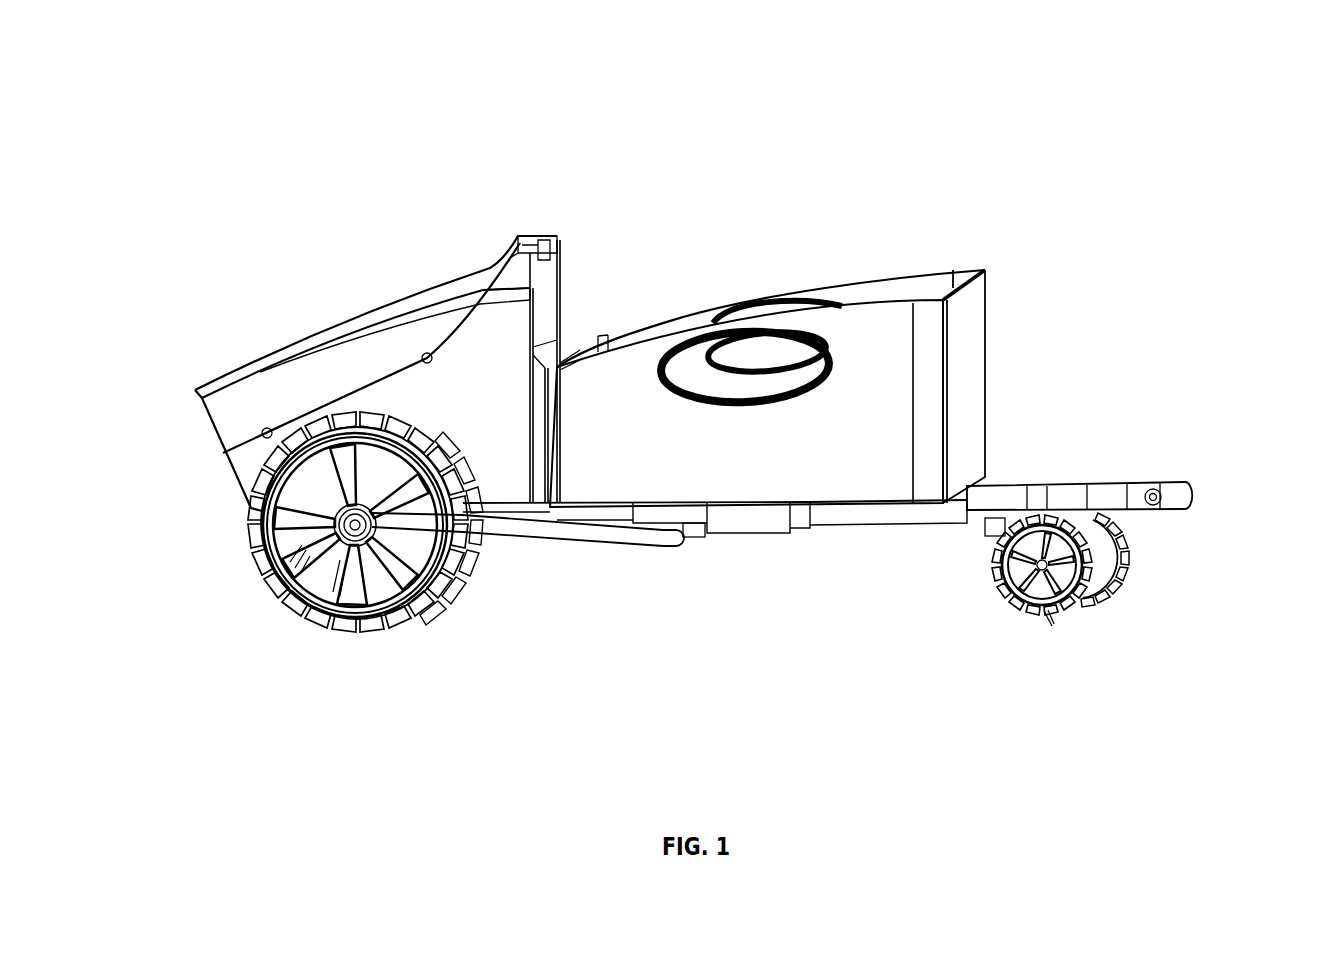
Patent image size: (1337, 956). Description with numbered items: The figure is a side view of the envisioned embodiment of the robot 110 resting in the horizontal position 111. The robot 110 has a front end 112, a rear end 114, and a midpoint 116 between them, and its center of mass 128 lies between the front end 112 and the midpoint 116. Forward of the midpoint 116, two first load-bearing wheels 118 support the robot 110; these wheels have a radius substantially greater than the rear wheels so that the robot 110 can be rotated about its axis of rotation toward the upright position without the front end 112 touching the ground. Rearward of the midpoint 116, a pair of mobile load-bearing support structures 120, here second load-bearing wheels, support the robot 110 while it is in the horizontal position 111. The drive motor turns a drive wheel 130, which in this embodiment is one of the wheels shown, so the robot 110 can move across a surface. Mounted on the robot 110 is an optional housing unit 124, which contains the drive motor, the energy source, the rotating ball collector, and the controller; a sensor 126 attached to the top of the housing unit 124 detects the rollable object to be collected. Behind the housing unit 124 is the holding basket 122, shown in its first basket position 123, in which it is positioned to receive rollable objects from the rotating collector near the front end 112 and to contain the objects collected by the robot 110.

The robot 110 is at (310, 227).
The horizontal position 111 is at (366, 343).
The front end 112 is at (207, 497).
The rear end 114 is at (1214, 492).
The midpoint 116 is at (648, 590).
The first load-bearing wheel 118 is at (322, 650).
The mobile load-bearing support structure 120 is at (1057, 620).
The holding basket 122 is at (1012, 275).
The first basket position 123 is at (750, 353).
The housing unit 124 is at (585, 283).
The sensor 126 is at (545, 208).
The center of mass 128 is at (512, 487).
The drive wheel 130 is at (365, 522).